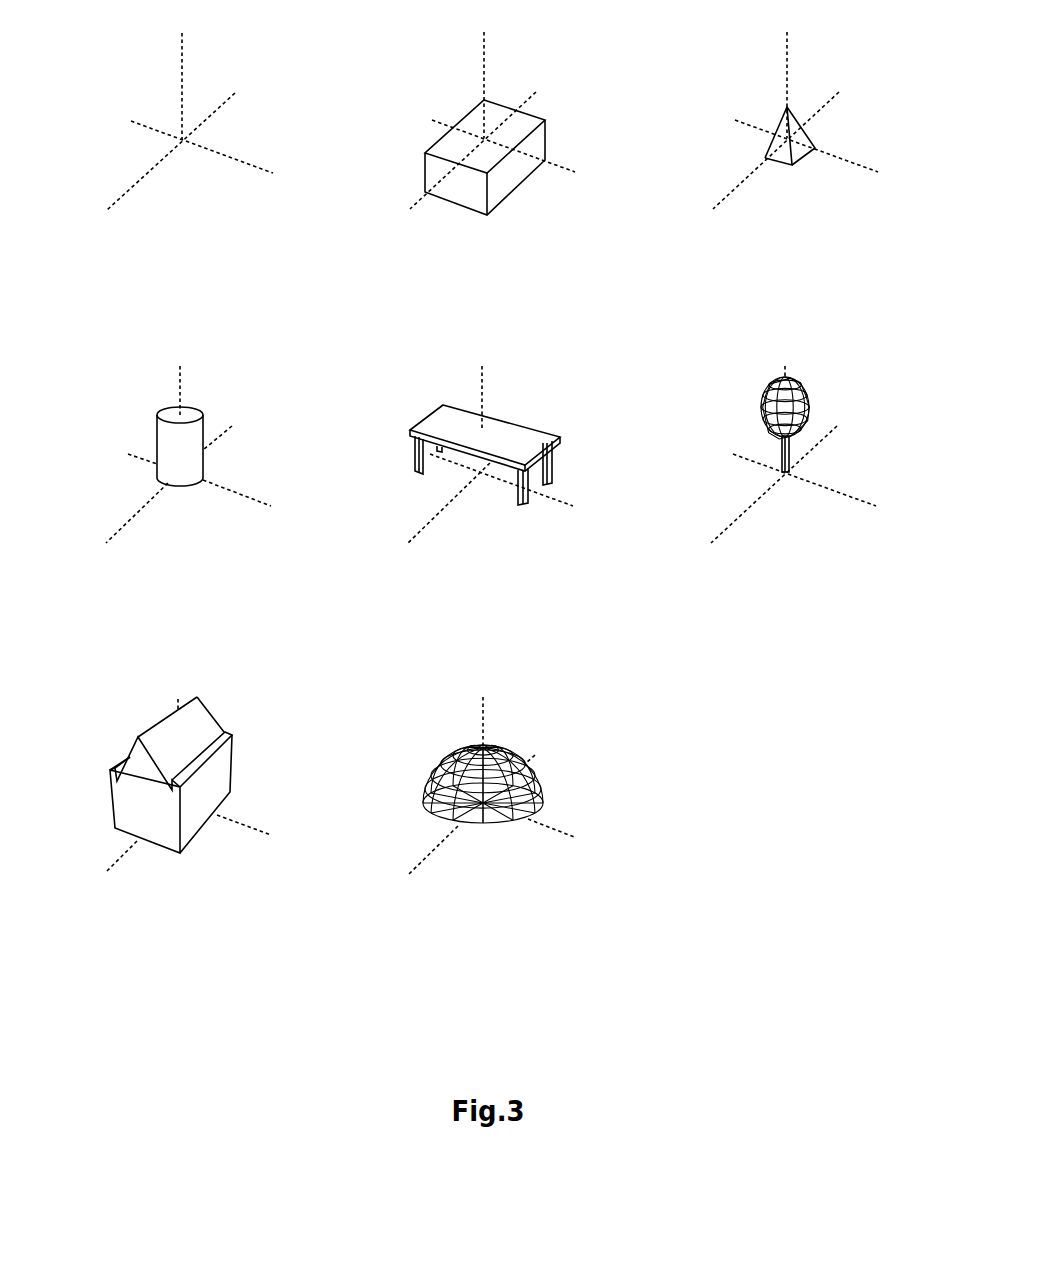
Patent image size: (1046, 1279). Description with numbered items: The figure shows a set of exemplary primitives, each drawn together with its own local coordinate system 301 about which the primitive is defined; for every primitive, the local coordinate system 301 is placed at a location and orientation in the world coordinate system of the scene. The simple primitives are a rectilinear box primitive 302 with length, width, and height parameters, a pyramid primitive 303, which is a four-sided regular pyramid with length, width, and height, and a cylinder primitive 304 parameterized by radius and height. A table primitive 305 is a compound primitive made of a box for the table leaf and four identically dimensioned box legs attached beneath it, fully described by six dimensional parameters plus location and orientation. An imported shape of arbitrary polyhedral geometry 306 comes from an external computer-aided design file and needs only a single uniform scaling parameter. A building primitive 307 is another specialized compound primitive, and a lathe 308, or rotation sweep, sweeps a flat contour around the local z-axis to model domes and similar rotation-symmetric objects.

The local coordinate system 301 is at (189, 139).
The box primitive 302 is at (492, 139).
The pyramid primitive 303 is at (794, 139).
The cylinder primitive 304 is at (188, 477).
The table primitive 305 is at (490, 477).
The polyhedral geometry 306 is at (792, 477).
The building primitive 307 is at (188, 814).
The lathe 308 is at (490, 814).